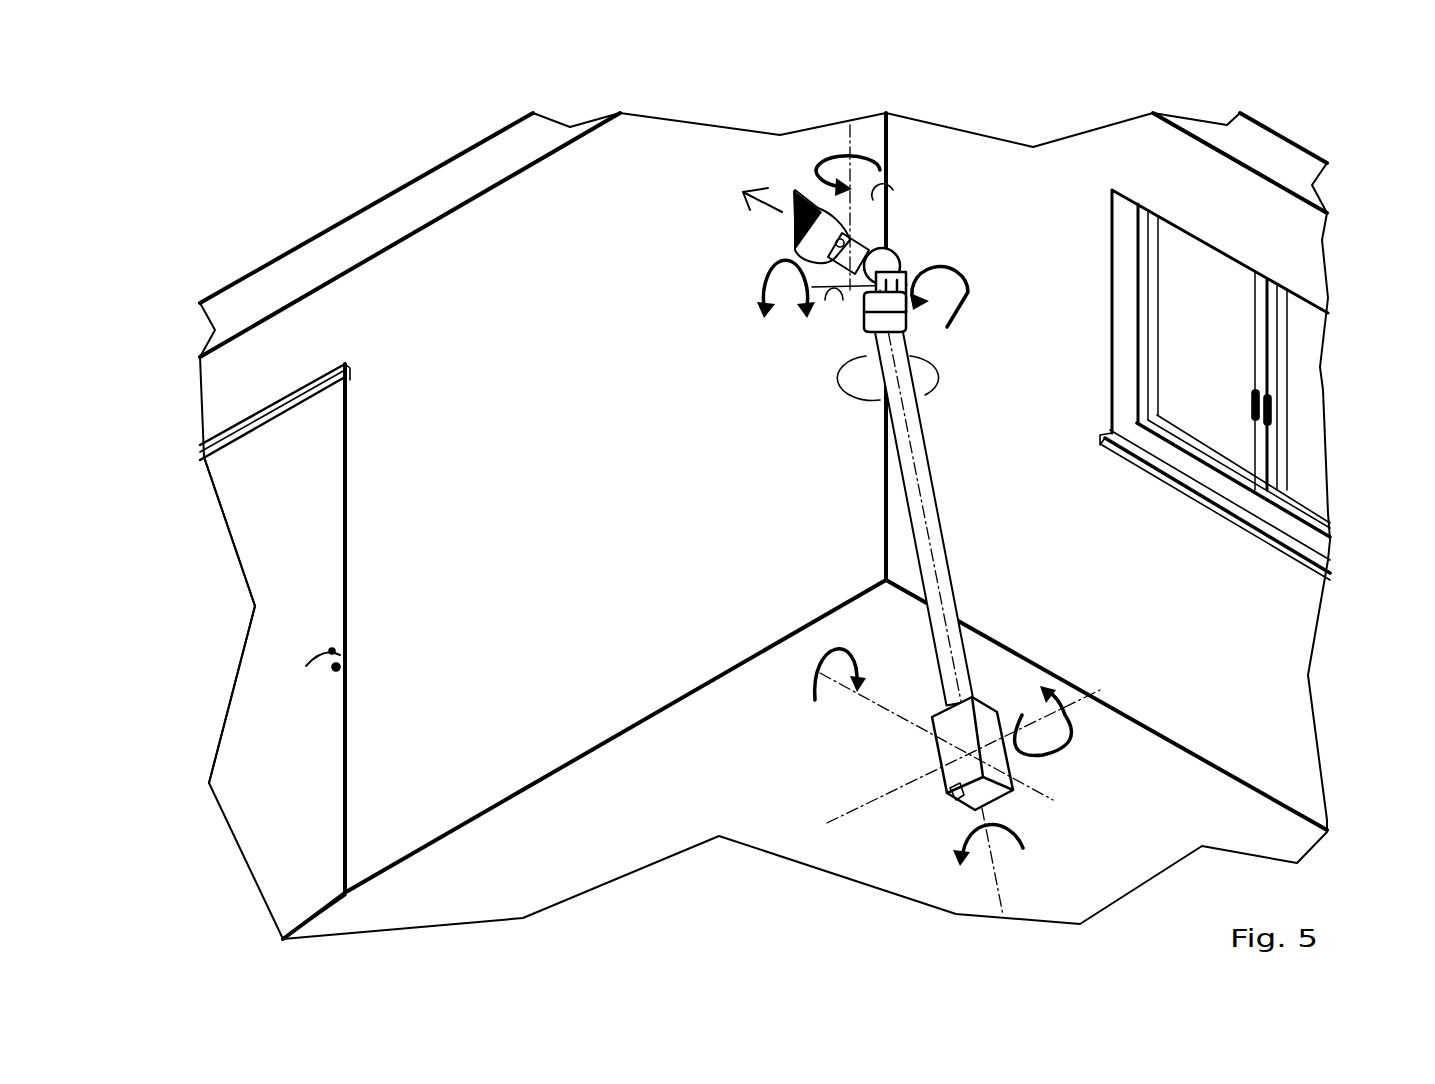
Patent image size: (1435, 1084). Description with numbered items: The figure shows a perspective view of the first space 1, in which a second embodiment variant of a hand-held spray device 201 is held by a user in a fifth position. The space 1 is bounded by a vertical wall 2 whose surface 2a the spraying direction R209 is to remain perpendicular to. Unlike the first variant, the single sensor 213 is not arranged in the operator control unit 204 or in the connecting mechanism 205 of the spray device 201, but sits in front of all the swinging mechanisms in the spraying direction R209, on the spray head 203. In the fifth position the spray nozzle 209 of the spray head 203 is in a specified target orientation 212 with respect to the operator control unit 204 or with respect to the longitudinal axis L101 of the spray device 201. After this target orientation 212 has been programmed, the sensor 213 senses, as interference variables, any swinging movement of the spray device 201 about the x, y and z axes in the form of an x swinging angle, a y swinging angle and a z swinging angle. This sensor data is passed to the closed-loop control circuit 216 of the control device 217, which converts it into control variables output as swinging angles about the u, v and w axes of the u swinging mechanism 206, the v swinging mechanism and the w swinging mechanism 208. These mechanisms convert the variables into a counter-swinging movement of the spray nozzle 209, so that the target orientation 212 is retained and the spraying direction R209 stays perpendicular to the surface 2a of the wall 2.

The first space 1 is at (312, 176).
The vertical wall 2 is at (340, 320).
The surface 2a is at (383, 295).
The hand-held spray device 201 is at (821, 465).
The spray head 203 is at (873, 232).
The operator control unit 204 is at (945, 770).
The connecting mechanism 205 is at (974, 543).
The u swinging mechanism 206 is at (866, 312).
The w swinging mechanism 208 is at (908, 245).
The spray nozzle 209 is at (775, 226).
The spraying direction R209 is at (777, 210).
The target orientation 212 is at (797, 255).
The single sensor 213 is at (822, 208).
The closed-loop control circuit 216 is at (957, 797).
The control device 217 is at (950, 785).
The length L101 is at (945, 510).